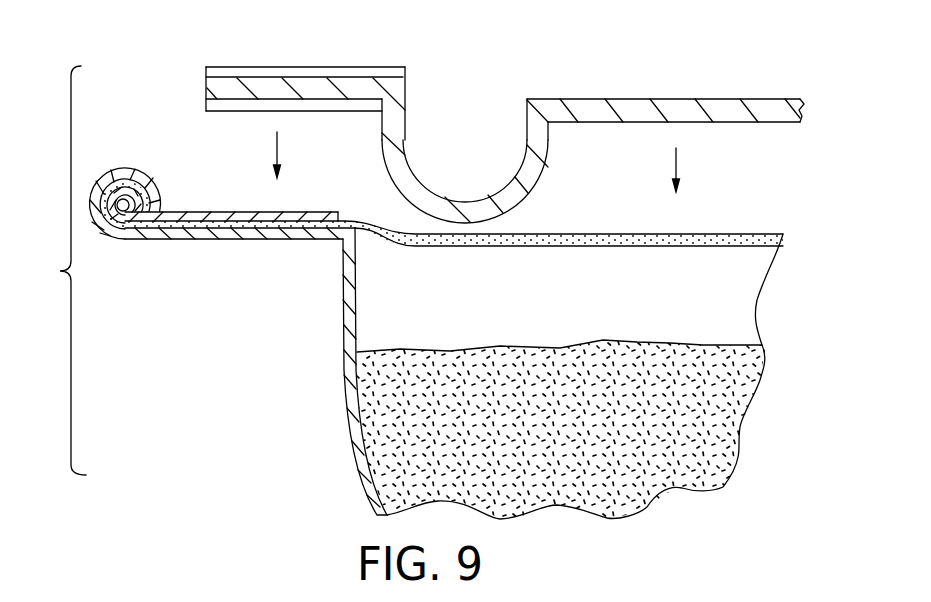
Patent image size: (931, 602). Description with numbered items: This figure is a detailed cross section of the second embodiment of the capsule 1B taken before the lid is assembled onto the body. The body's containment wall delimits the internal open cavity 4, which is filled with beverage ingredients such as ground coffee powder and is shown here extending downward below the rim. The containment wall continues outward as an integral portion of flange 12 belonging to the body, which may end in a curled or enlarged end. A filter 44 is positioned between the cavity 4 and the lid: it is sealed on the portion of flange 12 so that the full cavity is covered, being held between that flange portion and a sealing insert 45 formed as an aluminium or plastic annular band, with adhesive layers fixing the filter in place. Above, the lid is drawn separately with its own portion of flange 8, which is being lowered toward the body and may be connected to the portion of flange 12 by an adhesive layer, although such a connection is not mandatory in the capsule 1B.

The capsule 1B is at (58, 270).
The portion of flange 8 is at (228, 88).
The sealing insert 45 is at (187, 211).
The portion of flange 12 is at (201, 242).
The filter 44 is at (738, 247).
The internal open cavity 4 is at (391, 298).